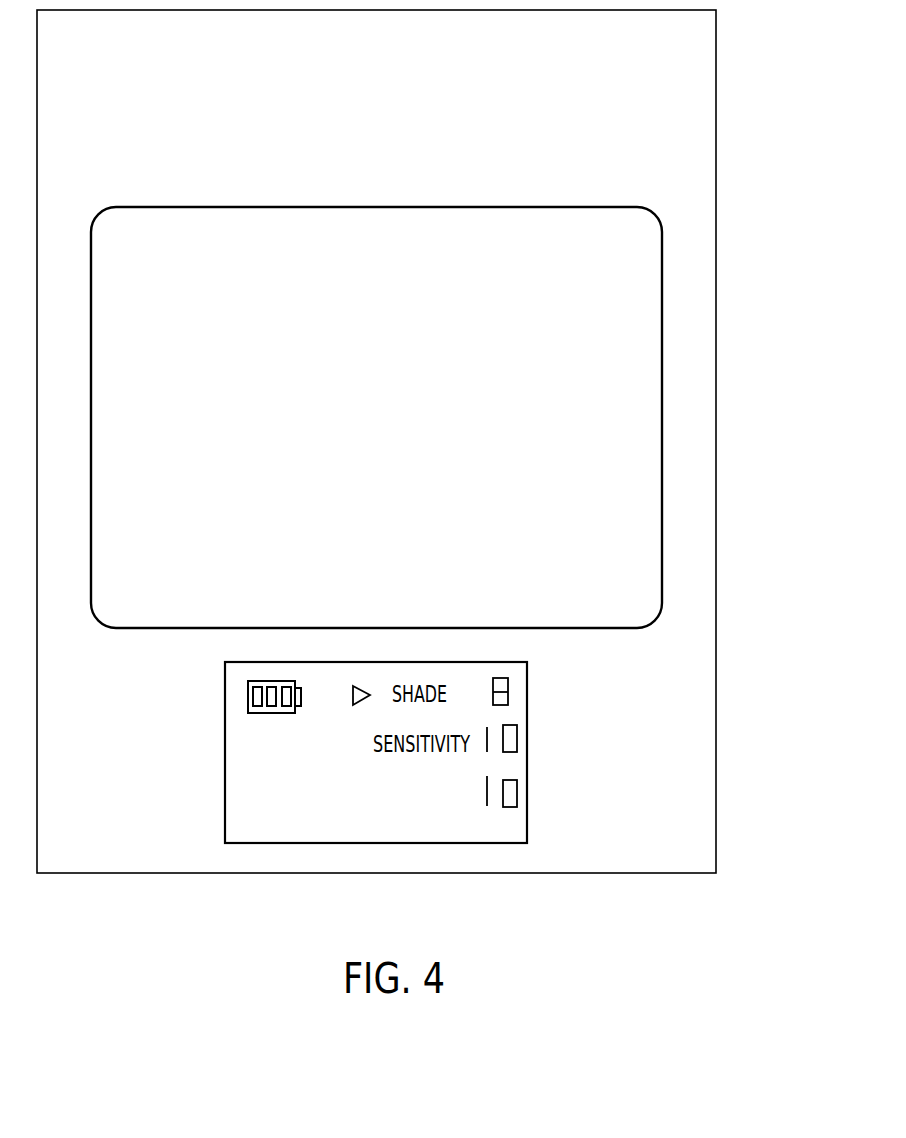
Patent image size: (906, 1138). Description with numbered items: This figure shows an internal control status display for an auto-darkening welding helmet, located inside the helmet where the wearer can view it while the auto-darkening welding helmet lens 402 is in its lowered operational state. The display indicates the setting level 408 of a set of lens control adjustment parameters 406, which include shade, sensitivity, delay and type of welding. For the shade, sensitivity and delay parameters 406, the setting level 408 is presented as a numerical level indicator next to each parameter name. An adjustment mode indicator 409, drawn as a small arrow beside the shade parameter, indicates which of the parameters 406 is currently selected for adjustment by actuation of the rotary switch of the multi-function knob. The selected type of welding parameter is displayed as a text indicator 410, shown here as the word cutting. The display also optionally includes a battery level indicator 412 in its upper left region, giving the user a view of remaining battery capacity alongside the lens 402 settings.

The auto-darkening welding helmet lens 402 is at (716, 782).
The lens control adjustment parameters 406 is at (418, 802).
The setting level 408 is at (498, 813).
The adjustment mode indicator 409 is at (351, 692).
The text indicator 410 is at (283, 827).
The battery level indicator 412 is at (258, 713).